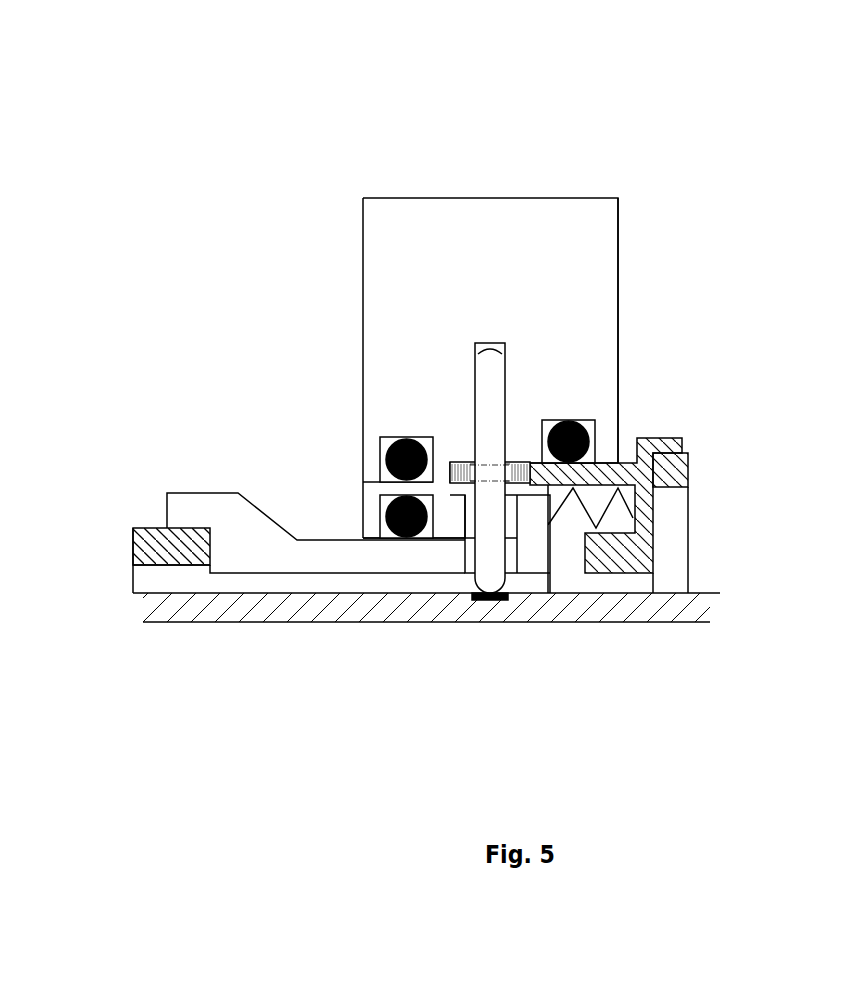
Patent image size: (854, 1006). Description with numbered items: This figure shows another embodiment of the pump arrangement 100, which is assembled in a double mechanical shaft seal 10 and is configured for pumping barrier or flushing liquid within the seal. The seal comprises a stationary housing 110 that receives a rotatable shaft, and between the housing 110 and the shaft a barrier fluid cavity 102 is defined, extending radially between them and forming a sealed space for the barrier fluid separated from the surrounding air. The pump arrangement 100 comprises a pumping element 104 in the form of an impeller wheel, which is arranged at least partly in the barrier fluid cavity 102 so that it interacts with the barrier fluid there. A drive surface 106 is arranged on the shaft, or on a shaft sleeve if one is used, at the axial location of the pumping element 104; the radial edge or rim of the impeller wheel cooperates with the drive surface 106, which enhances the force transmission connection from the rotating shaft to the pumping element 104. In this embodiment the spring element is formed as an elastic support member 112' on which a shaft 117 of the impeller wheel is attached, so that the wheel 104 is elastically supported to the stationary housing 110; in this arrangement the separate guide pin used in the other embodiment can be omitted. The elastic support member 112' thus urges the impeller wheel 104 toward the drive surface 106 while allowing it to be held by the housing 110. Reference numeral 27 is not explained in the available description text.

The double mechanical shaft seal 10 is at (228, 393).
The bearing / sealing ring 27 is at (377, 520).
The pump arrangement 100 is at (423, 163).
The barrier fluid cavity 102 is at (333, 580).
The pumping element 104 is at (483, 553).
The drive surface 106 is at (496, 601).
The stationary housing 110 is at (383, 258).
The elastic support member 112' is at (636, 568).
The shaft of the impeller wheel 117 is at (522, 468).